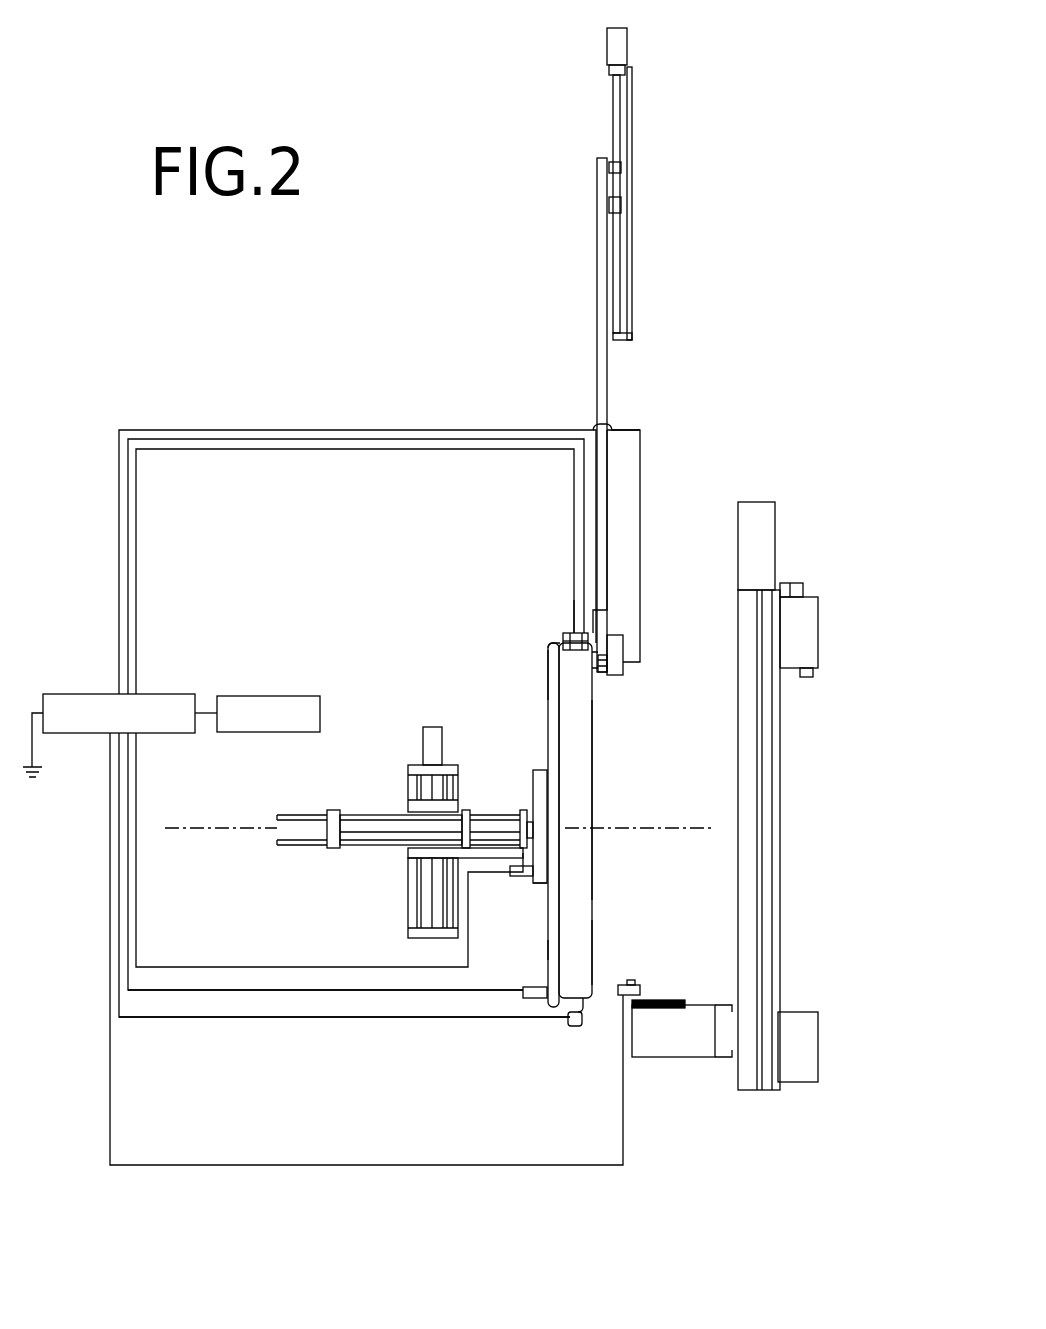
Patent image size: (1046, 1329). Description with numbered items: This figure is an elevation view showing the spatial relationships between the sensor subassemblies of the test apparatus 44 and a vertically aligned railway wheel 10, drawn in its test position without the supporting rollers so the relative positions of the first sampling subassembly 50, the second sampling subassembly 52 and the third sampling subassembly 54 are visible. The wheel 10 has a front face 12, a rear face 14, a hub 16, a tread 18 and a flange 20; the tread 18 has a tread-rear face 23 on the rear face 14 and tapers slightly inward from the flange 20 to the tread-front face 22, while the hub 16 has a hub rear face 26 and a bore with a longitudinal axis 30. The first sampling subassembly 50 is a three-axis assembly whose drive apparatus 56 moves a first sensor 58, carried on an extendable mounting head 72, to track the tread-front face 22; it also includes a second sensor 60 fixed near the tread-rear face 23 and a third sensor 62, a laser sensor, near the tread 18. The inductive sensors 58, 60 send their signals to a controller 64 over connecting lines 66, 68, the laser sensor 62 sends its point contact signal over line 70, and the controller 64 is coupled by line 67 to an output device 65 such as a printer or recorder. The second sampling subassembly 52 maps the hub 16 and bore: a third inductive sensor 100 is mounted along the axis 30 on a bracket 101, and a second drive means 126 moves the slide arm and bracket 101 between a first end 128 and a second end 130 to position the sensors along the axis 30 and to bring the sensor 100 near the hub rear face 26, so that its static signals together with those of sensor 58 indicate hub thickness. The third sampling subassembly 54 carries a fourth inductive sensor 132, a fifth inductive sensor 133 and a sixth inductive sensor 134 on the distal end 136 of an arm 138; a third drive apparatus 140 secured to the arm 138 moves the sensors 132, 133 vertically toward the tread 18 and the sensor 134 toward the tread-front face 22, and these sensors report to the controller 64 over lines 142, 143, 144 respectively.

The railway wheel 10 is at (603, 748).
The front face 12 is at (592, 950).
The rear face 14 is at (545, 946).
The hub 16 is at (533, 890).
The tread 18 is at (586, 1010).
The flange 20 is at (548, 642).
The tread-front face 22 is at (592, 912).
The tread-rear face 23 is at (548, 657).
The hub rear face 26 is at (532, 784).
The longitudinal axis 30 is at (690, 826).
The test apparatus 44 is at (355, 573).
The first sampling subassembly 50 is at (790, 566).
The second sampling subassembly 52 is at (405, 832).
The third sampling subassembly 54 is at (572, 598).
The drive apparatus 56 is at (822, 640).
The first sensor 58 is at (630, 985).
The second sensor 60 is at (527, 999).
The third sensor 62 is at (570, 1025).
The controller 64 is at (164, 694).
The output device 65 is at (316, 696).
The connecting line 66 is at (623, 1137).
The line 67 is at (200, 716).
The connecting line 68 is at (250, 990).
The line 70 is at (220, 1020).
The extendable mounting head 72 is at (685, 1057).
The third inductive sensor 100 is at (512, 877).
The bracket 101 is at (407, 850).
The second drive means 126 is at (423, 748).
The first end 128 is at (408, 768).
The second end 130 is at (408, 935).
The fourth inductive sensor 132 is at (565, 640).
The fifth inductive sensor 133 is at (568, 633).
The sixth inductive sensor 134 is at (598, 683).
The distal end 136 is at (607, 617).
The arm 138 is at (607, 380).
The third drive apparatus 140 is at (632, 92).
The line 142 is at (195, 449).
The line 143 is at (450, 439).
The line 144 is at (263, 430).